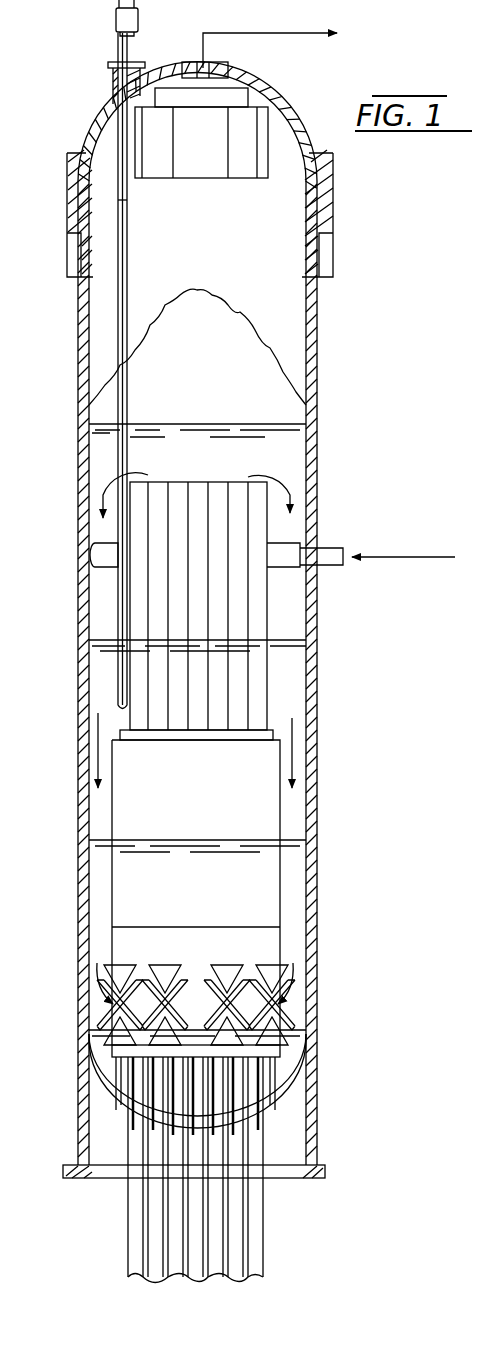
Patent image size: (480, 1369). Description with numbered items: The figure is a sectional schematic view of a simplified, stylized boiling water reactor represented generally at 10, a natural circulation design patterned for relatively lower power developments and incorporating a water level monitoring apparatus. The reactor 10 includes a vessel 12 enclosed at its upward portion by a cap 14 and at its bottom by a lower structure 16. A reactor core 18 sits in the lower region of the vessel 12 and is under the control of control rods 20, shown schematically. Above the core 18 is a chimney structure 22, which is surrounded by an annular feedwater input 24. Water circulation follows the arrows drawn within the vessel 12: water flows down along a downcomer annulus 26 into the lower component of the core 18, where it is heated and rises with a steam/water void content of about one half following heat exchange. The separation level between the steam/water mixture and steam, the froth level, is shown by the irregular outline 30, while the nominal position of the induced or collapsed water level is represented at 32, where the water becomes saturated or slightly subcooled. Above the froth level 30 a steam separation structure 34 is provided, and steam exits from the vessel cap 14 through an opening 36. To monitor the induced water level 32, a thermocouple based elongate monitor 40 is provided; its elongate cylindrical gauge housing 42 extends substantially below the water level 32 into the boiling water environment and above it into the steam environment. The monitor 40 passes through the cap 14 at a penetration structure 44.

The reactor vessel 10 is at (447, 177).
The vessel 12 is at (318, 447).
The cap 14 is at (302, 114).
The lower structure 16 is at (325, 1108).
The reactor core 18 is at (262, 886).
The control rods 20 is at (270, 1228).
The chimney structure 22 is at (258, 673).
The annular feedwater input 24 is at (336, 566).
The downcomer annulus 26 is at (107, 680).
The froth level 30 is at (280, 356).
The water level 32 is at (275, 423).
The steam separation structure 34 is at (157, 135).
The opening 36 is at (209, 67).
The elongate monitor 40 is at (136, 244).
The gauge housing 42 is at (128, 262).
The penetration structure 44 is at (110, 80).